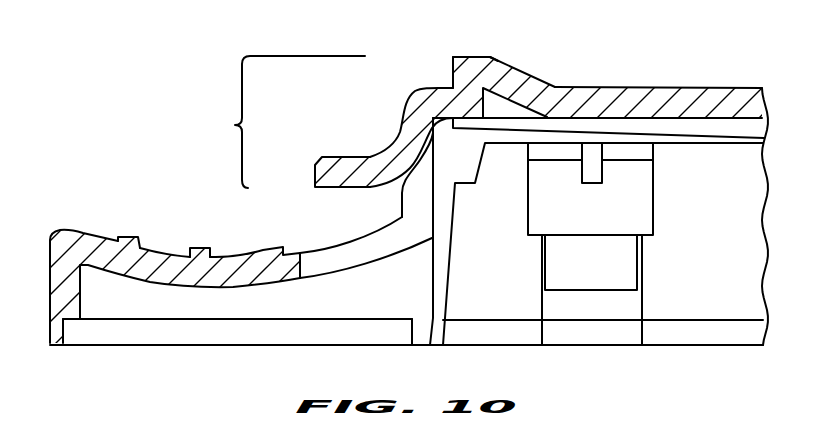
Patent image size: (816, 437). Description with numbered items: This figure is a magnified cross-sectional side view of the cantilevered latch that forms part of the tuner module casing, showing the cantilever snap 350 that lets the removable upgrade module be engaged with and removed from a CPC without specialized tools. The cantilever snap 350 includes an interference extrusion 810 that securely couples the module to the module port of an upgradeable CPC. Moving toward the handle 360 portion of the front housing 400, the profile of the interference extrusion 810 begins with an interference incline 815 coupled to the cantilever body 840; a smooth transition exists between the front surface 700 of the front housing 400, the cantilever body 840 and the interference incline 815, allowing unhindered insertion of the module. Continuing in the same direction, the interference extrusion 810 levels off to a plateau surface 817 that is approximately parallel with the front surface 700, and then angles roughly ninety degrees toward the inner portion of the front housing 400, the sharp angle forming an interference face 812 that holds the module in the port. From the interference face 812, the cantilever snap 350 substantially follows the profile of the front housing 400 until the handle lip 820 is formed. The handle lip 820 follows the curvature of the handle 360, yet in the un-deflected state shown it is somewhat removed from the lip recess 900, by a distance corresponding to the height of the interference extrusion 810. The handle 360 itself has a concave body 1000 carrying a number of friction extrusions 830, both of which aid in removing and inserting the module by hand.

The cantilever snap 350 is at (281, 122).
The handle 360 is at (76, 209).
The front housing 400 is at (265, 402).
The front surface 700 is at (714, 74).
The interference extrusion 810 is at (438, 41).
The interference face 812 is at (452, 67).
The interference incline 815 is at (531, 76).
The plateau surface 817 is at (465, 56).
The handle lip 820 is at (313, 160).
The friction extrusions 830 is at (254, 250).
The cantilever body 840 is at (653, 87).
The lip recess 900 is at (337, 247).
The concave body 1000 is at (158, 247).